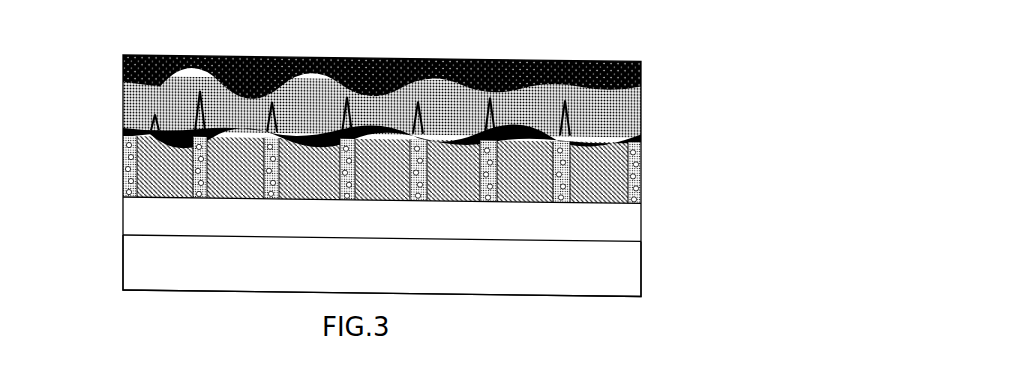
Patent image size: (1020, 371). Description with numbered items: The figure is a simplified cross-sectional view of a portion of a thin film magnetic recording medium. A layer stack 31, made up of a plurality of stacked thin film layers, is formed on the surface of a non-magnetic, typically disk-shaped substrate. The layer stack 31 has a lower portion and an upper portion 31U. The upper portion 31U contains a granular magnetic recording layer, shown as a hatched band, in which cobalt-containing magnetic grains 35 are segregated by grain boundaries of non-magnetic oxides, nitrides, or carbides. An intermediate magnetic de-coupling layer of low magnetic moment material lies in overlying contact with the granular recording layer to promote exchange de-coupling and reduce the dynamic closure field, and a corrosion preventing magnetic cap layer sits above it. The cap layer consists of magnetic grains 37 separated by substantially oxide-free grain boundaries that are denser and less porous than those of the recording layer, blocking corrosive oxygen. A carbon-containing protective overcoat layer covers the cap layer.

The layer stack 31 is at (125, 87).
The upper portion of layer stack 31U is at (708, 103).
The Co-containing magnetic grains 35 is at (383, 206).
The grains of magnetic cap layer 37 is at (155, 137).